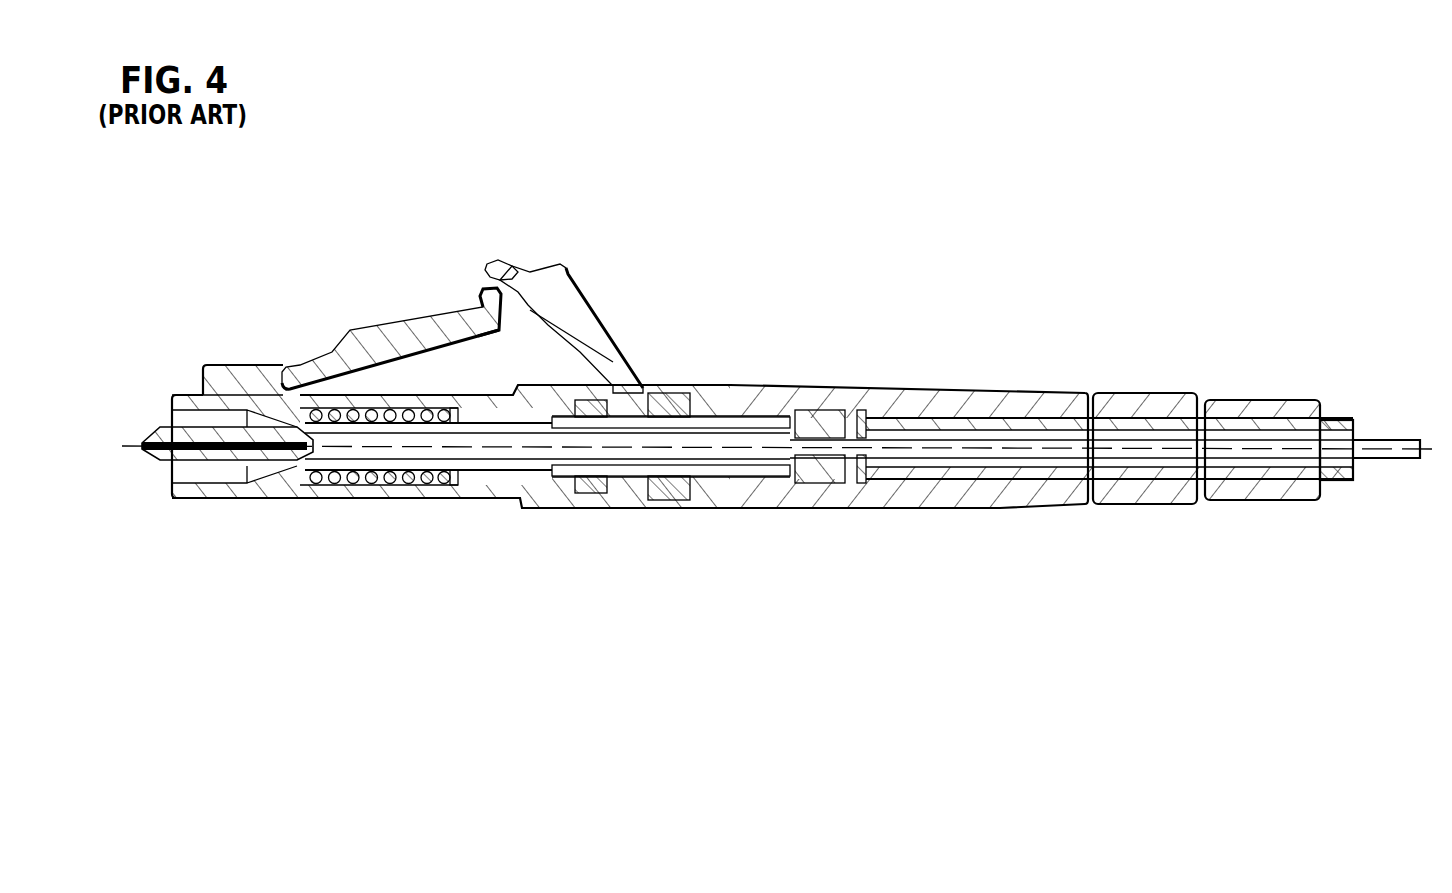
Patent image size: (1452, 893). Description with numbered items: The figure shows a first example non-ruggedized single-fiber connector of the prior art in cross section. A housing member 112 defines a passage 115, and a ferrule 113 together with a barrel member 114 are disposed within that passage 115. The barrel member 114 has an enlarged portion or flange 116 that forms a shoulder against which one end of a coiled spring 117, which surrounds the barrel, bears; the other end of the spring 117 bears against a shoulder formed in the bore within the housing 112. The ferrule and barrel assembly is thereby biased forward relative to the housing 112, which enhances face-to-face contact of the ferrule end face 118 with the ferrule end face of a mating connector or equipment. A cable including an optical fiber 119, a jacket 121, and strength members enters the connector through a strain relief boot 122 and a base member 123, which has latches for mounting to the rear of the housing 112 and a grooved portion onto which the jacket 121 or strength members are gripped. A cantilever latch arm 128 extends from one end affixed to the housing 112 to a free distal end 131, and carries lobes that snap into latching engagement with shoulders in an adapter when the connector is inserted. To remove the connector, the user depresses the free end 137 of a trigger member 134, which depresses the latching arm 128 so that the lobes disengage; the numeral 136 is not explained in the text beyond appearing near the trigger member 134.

The housing member 112 is at (290, 498).
The ferrule 113 is at (158, 425).
The barrel member 114 is at (630, 476).
The passage 115 is at (485, 471).
The flange 116 is at (303, 488).
The coiled spring 117 is at (410, 482).
The ferrule end face 118 is at (143, 448).
The optical fiber 119 is at (1398, 440).
The jacket 121 is at (1334, 410).
The strain relief boot 122 is at (1147, 393).
The base member 123 is at (750, 400).
The cantilever latch arm 128 is at (413, 310).
The free distal end 131 is at (498, 312).
The trigger member 134 is at (563, 272).
The arm foot 136 is at (633, 385).
The free end 137 is at (490, 265).